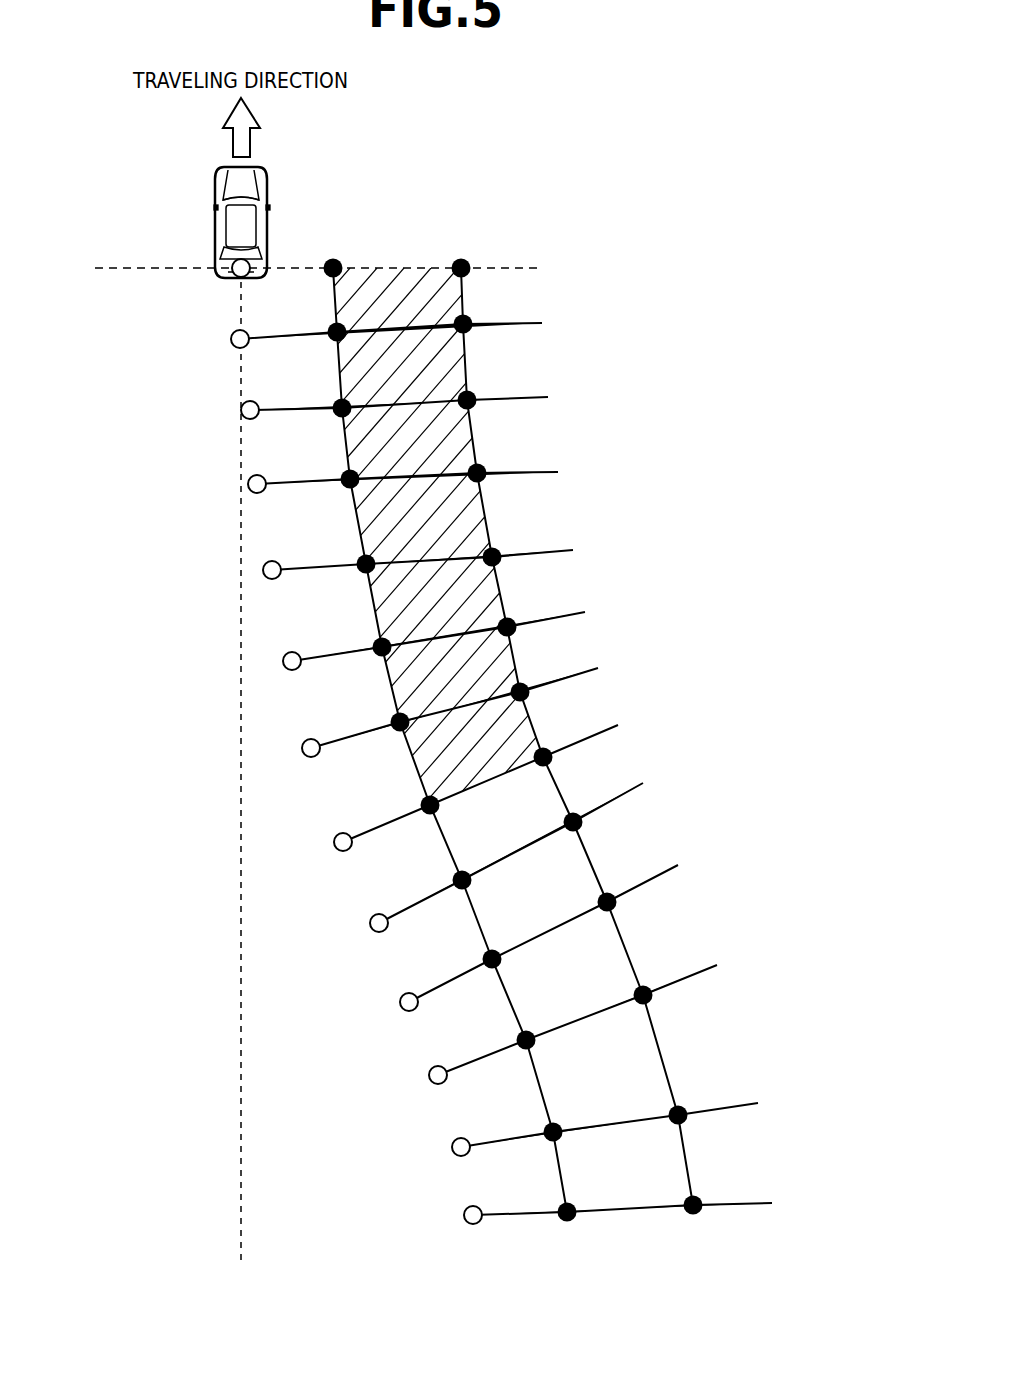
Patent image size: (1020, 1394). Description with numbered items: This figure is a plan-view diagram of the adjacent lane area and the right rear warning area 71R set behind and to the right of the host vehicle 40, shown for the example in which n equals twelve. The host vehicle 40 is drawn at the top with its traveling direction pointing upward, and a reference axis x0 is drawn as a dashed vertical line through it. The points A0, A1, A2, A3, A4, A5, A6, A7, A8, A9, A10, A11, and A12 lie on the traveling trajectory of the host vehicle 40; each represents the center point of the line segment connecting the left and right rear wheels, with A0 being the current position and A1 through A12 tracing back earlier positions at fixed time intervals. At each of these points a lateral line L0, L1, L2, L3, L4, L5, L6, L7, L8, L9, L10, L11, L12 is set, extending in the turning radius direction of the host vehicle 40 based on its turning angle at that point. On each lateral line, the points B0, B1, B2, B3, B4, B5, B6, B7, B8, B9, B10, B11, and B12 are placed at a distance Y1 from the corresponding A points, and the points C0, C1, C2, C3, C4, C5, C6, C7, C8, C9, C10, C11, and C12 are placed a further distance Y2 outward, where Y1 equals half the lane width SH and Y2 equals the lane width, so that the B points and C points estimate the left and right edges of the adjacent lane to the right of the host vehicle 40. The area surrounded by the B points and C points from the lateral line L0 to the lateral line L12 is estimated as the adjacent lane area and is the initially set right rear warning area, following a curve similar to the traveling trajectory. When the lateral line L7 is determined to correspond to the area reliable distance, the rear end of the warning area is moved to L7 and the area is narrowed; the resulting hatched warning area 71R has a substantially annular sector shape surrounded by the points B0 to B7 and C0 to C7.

The host vehicle 40 is at (268, 190).
The warning area 71R is at (397, 266).
The vehicle reference axis x0 is at (140, 759).
The lateral line L0 is at (339, 268).
The lateral line L1 is at (412, 323).
The lateral line L2 is at (419, 398).
The lateral line L3 is at (428, 473).
The lateral line L4 is at (443, 553).
The lateral line L5 is at (460, 629).
The lateral line L6 is at (476, 701).
The lateral line L7 is at (502, 776).
The lateral line L8 is at (532, 846).
The lateral line L9 is at (565, 926).
The lateral line L10 is at (604, 1013).
The lateral line L11 is at (637, 1118).
The lateral line L12 is at (649, 1204).
The point A0 is at (201, 249).
The point A1 is at (219, 339).
The point A2 is at (229, 410).
The point A3 is at (232, 488).
The point A4 is at (272, 551).
The point A5 is at (285, 644).
The point A6 is at (301, 730).
The point A7 is at (333, 824).
The point A8 is at (369, 905).
The point A9 is at (400, 982).
The point A10 is at (420, 1058).
The point A11 is at (442, 1133).
The point A12 is at (450, 1201).
The point B0 is at (327, 250).
The point B1 is at (320, 315).
The point B2 is at (324, 394).
The point B3 is at (334, 467).
The point B4 is at (347, 549).
The point B5 is at (362, 633).
The point B6 is at (381, 709).
The point B7 is at (410, 794).
The point B8 is at (443, 869).
The point B9 is at (472, 951).
The point B10 is at (495, 1030).
The point B11 is at (525, 1120).
The point B12 is at (570, 1231).
The point C0 is at (467, 250).
The point C1 is at (482, 309).
The point C2 is at (487, 388).
The point C3 is at (496, 460).
The point C4 is at (510, 540).
The point C5 is at (522, 611).
The point C6 is at (540, 674).
The point C7 is at (558, 732).
The point C8 is at (583, 801).
The point C9 is at (619, 879).
The point C10 is at (658, 975).
The point C11 is at (698, 1094).
The point C12 is at (698, 1225).